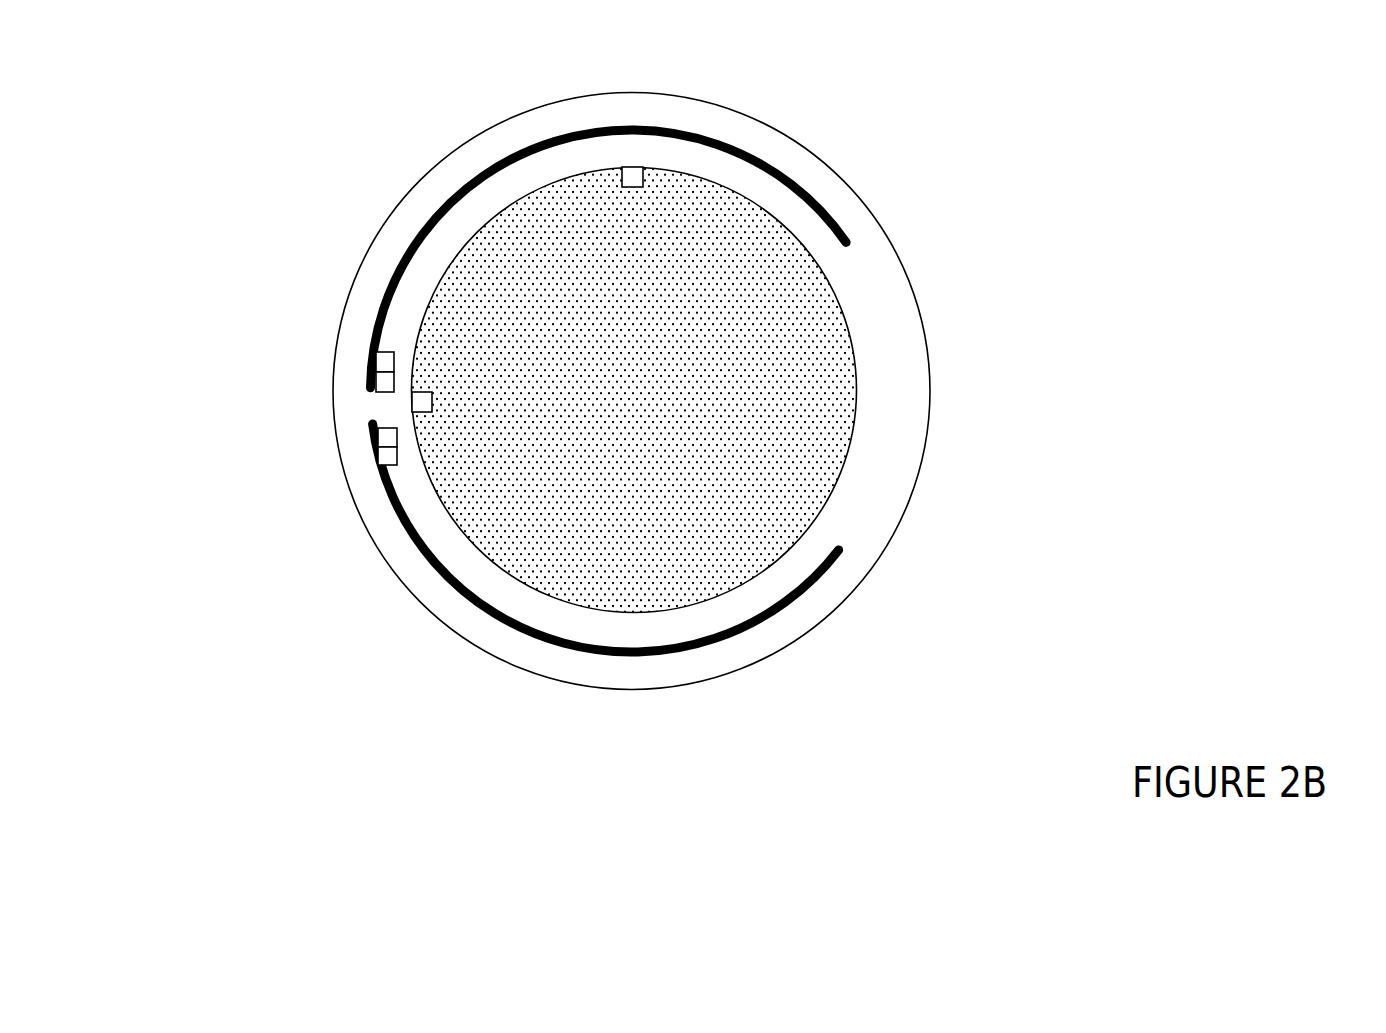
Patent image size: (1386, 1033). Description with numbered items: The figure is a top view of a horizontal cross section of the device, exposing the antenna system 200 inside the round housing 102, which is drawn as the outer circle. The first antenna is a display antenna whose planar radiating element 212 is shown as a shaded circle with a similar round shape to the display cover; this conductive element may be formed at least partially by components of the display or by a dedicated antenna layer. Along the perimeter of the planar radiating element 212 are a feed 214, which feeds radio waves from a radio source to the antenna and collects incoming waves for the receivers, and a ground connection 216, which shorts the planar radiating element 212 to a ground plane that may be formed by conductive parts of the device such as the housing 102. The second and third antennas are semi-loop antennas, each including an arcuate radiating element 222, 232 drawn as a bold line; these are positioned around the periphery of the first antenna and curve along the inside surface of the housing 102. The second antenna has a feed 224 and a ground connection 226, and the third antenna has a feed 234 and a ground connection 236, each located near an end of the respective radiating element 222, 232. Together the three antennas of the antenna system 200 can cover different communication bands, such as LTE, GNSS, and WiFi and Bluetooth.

The antenna system 200 is at (760, 71).
The housing 102 is at (853, 187).
The planar radiating element 212 is at (827, 398).
The feed 214 is at (432, 403).
The ground connection 216 is at (628, 187).
The radiating element 222 is at (405, 257).
The feed 224 is at (383, 381).
The ground connection 226 is at (376, 358).
The radiating element 232 is at (423, 558).
The feed 234 is at (378, 437).
The ground connection 236 is at (378, 462).